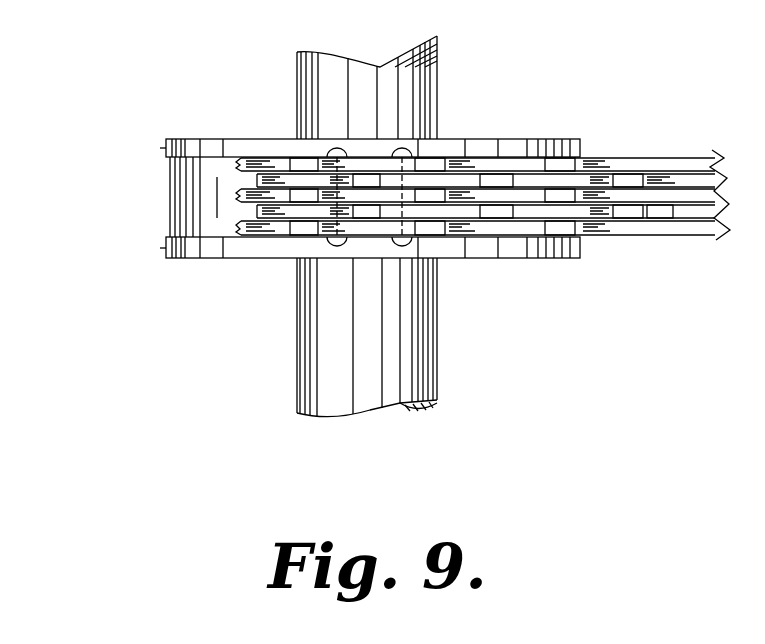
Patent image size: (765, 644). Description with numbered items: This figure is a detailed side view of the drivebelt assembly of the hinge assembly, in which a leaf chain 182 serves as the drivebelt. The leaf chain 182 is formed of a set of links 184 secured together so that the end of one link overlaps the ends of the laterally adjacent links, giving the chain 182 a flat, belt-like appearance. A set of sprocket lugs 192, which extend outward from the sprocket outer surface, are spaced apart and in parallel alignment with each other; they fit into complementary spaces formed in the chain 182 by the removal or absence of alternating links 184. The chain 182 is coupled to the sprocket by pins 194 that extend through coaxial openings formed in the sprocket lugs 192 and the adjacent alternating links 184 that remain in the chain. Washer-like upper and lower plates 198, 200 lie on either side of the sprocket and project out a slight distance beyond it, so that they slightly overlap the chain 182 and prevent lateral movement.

The leaf chain 182 is at (623, 144).
The links 184 is at (640, 226).
The sprocket lugs 192 is at (326, 193).
The pins 194 is at (336, 156).
The upper plate 198 is at (166, 152).
The lower plate 200 is at (166, 248).